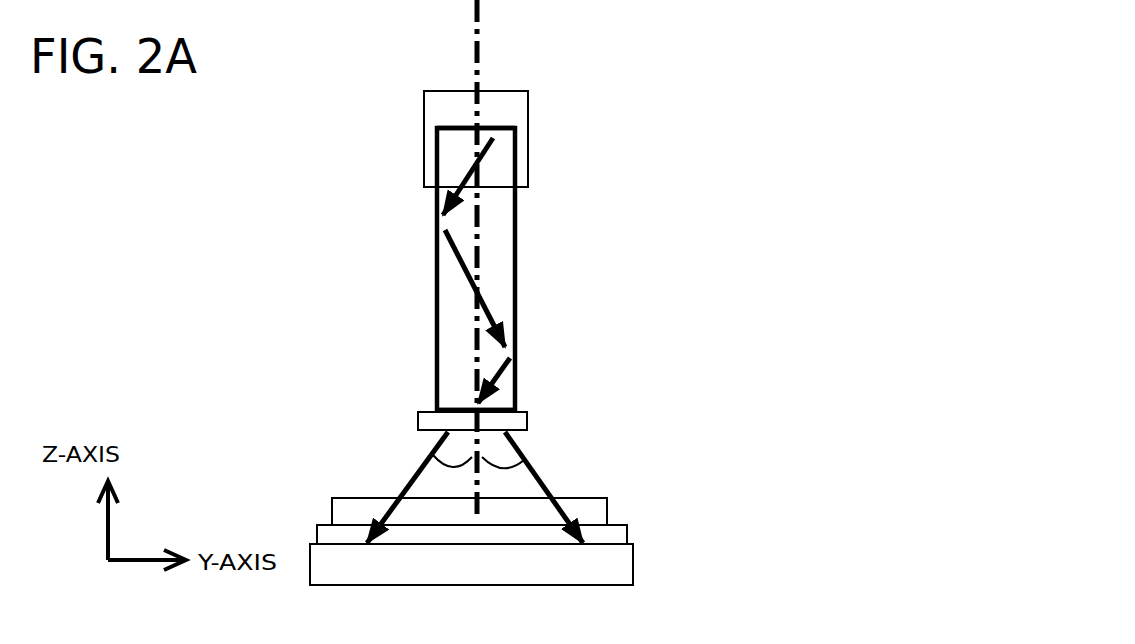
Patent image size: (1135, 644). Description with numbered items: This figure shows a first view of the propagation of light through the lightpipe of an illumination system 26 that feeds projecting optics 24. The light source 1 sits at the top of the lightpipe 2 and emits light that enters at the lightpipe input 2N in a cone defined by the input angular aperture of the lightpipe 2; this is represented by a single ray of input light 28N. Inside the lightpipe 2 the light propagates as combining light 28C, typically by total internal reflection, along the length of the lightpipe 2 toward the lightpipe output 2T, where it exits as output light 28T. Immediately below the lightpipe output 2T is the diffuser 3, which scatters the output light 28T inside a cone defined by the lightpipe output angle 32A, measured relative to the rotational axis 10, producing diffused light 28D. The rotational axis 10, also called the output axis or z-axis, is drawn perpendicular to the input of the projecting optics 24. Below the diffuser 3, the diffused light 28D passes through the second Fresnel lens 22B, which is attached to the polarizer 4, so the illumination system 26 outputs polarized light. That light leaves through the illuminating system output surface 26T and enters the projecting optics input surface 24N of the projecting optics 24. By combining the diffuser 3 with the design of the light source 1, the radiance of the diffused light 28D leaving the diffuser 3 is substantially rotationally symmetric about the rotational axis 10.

The rotational axis 10 is at (477, 45).
The light source 1 is at (528, 137).
The lightpipe 2 is at (515, 270).
The lightpipe input 2N is at (477, 126).
The lightpipe output 2T is at (475, 415).
The illumination system 26 is at (262, 270).
The input light 28N is at (552, 165).
The combining light 28C is at (488, 313).
The output light 28T is at (538, 407).
The diffused light 28D is at (556, 481).
The diffuser 3 is at (472, 422).
The second Fresnel lens 22B is at (469, 511).
The polarizer 4 is at (472, 535).
The projecting optics 24 is at (471, 564).
The illuminating system output surface 26T is at (613, 540).
The projecting optics input surface 24N is at (617, 555).
The lightpipe output angle 32A is at (504, 476).